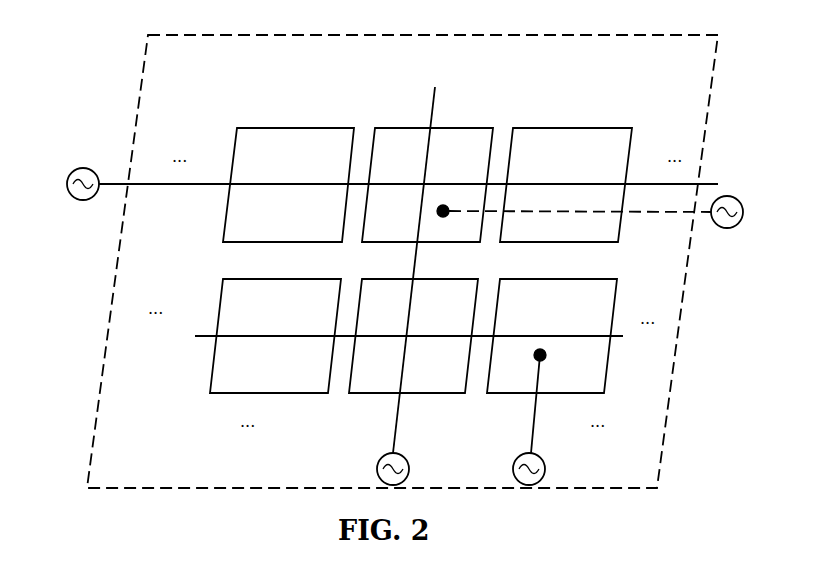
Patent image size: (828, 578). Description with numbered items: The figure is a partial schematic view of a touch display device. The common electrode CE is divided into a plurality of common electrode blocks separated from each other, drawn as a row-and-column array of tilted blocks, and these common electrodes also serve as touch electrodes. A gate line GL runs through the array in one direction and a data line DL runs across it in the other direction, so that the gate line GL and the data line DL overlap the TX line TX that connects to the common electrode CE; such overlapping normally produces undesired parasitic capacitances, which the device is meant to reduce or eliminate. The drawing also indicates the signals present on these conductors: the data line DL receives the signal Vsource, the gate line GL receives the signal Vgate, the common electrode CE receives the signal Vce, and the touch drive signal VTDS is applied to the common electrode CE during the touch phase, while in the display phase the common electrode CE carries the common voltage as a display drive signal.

The common electrode CE is at (421, 260).
The gate line GL is at (426, 259).
The data line DL is at (422, 185).
The TX line TX is at (547, 401).
The signal provided to the data line Vsource is at (49, 184).
The touch drive signal VTDS is at (595, 223).
The signal received by the gate line Vgate is at (417, 469).
The signal applied to the common electrode Vce is at (549, 469).